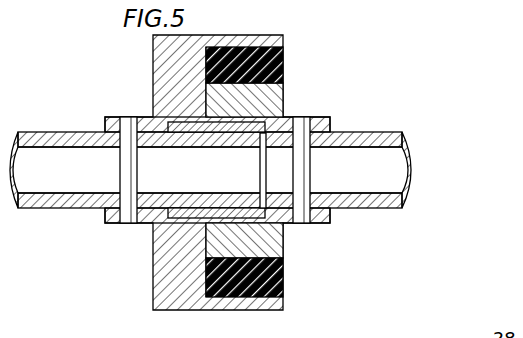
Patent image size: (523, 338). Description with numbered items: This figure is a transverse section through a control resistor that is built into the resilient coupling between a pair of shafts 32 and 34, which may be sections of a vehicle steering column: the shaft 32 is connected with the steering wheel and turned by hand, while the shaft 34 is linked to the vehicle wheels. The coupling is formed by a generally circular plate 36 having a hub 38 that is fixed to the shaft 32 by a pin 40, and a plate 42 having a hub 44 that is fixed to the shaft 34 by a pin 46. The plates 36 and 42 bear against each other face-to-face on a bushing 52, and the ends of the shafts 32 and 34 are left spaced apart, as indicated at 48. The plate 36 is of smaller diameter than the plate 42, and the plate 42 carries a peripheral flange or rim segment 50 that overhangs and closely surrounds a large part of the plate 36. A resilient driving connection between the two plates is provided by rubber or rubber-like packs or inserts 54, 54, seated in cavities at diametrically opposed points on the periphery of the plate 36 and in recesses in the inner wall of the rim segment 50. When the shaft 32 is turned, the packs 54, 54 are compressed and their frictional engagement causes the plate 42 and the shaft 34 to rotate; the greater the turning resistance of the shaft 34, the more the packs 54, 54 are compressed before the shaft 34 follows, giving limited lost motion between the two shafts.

The shaft 32 is at (352, 133).
The shaft 34 is at (48, 132).
The circular plate 36 is at (280, 92).
The hub 38 is at (322, 117).
The pin 40 is at (311, 173).
The plate 42 is at (168, 72).
The hub 44 is at (105, 117).
The pin 46 is at (119, 171).
The space between shaft ends 48 is at (259, 173).
The peripheral flange or rim segment 50 is at (268, 36).
The bushing 52 is at (178, 147).
The rubber inserts 54 is at (283, 60).